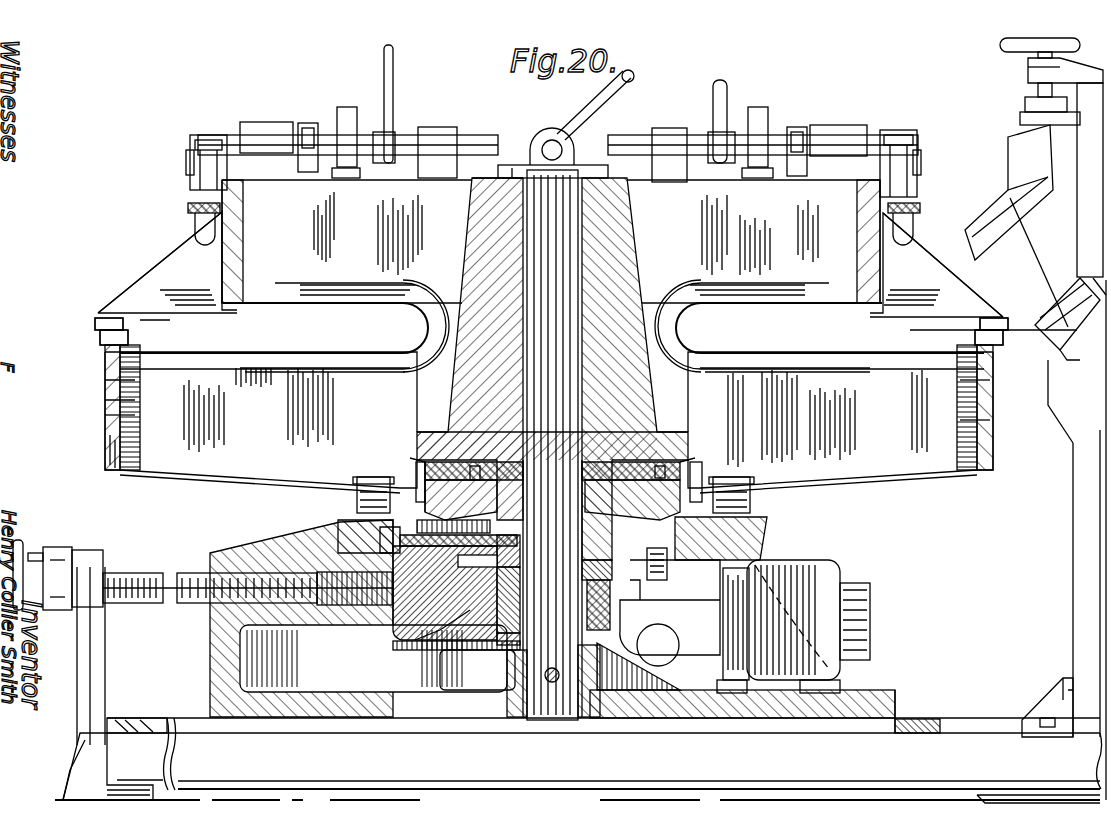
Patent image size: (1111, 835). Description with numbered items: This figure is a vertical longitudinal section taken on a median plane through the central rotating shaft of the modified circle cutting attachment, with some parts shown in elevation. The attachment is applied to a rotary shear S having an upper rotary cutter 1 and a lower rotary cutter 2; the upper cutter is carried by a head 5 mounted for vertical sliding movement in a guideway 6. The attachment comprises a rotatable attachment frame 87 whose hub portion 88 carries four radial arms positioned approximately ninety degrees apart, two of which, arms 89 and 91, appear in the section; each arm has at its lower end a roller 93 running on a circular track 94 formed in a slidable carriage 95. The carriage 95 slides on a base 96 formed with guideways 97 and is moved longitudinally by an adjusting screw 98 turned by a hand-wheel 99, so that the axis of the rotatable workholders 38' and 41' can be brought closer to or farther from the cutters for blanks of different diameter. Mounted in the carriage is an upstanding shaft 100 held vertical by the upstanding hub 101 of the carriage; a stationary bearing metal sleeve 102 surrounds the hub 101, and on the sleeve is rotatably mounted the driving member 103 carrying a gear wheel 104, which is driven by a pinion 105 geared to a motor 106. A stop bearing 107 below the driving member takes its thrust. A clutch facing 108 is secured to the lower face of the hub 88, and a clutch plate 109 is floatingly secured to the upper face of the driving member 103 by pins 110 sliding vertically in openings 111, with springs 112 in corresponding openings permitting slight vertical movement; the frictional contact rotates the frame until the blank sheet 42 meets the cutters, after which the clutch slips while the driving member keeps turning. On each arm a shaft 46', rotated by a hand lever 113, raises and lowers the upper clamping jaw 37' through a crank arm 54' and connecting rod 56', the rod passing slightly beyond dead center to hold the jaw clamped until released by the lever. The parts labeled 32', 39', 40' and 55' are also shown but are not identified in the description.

The upper rotary cutter 1 is at (1099, 290).
The lower rotary cutter 2 is at (1032, 350).
The head 5 is at (1028, 212).
The guideway 6 is at (1051, 157).
The rotary shear S is at (1087, 154).
The annular chamber 32' is at (552, 276).
The upper clamping jaw 37' is at (550, 264).
The rotatable workholder 38' is at (543, 303).
The plate 39' is at (552, 410).
The plate 40' is at (552, 434).
The rotatable workholder 41' is at (547, 358).
The blank sheet 42 is at (1005, 329).
The shaft 46' is at (558, 132).
The crank arm 54' is at (543, 145).
The bolt 55' is at (553, 147).
The connecting rod 56' is at (544, 206).
The rotatable attachment frame 87 is at (520, 152).
The hub portion 88 is at (498, 188).
The arm 89 is at (910, 470).
The arm 91 is at (217, 465).
The roller 93 is at (355, 499).
The circular track 94 is at (768, 526).
The slidable carriage 95 is at (202, 641).
The base 96 is at (580, 541).
The guideways 97 is at (180, 722).
The adjusting screw 98 is at (192, 580).
The hand-wheel 99 is at (20, 542).
The upstanding shaft 100 is at (545, 245).
The upstanding hub 101 is at (470, 652).
The stationary bearing metal sleeve 102 is at (338, 530).
The driving member 103 is at (416, 478).
The gear wheel 104 is at (485, 592).
The pinion 105 is at (668, 563).
The motor 106 is at (798, 601).
The stop bearing 107 is at (450, 642).
The clutch facing 108 is at (435, 477).
The clutch plate 109 is at (690, 462).
The pins 110 is at (450, 435).
The openings 111 is at (690, 482).
The springs 112 is at (650, 425).
The hand lever 113 is at (384, 60).